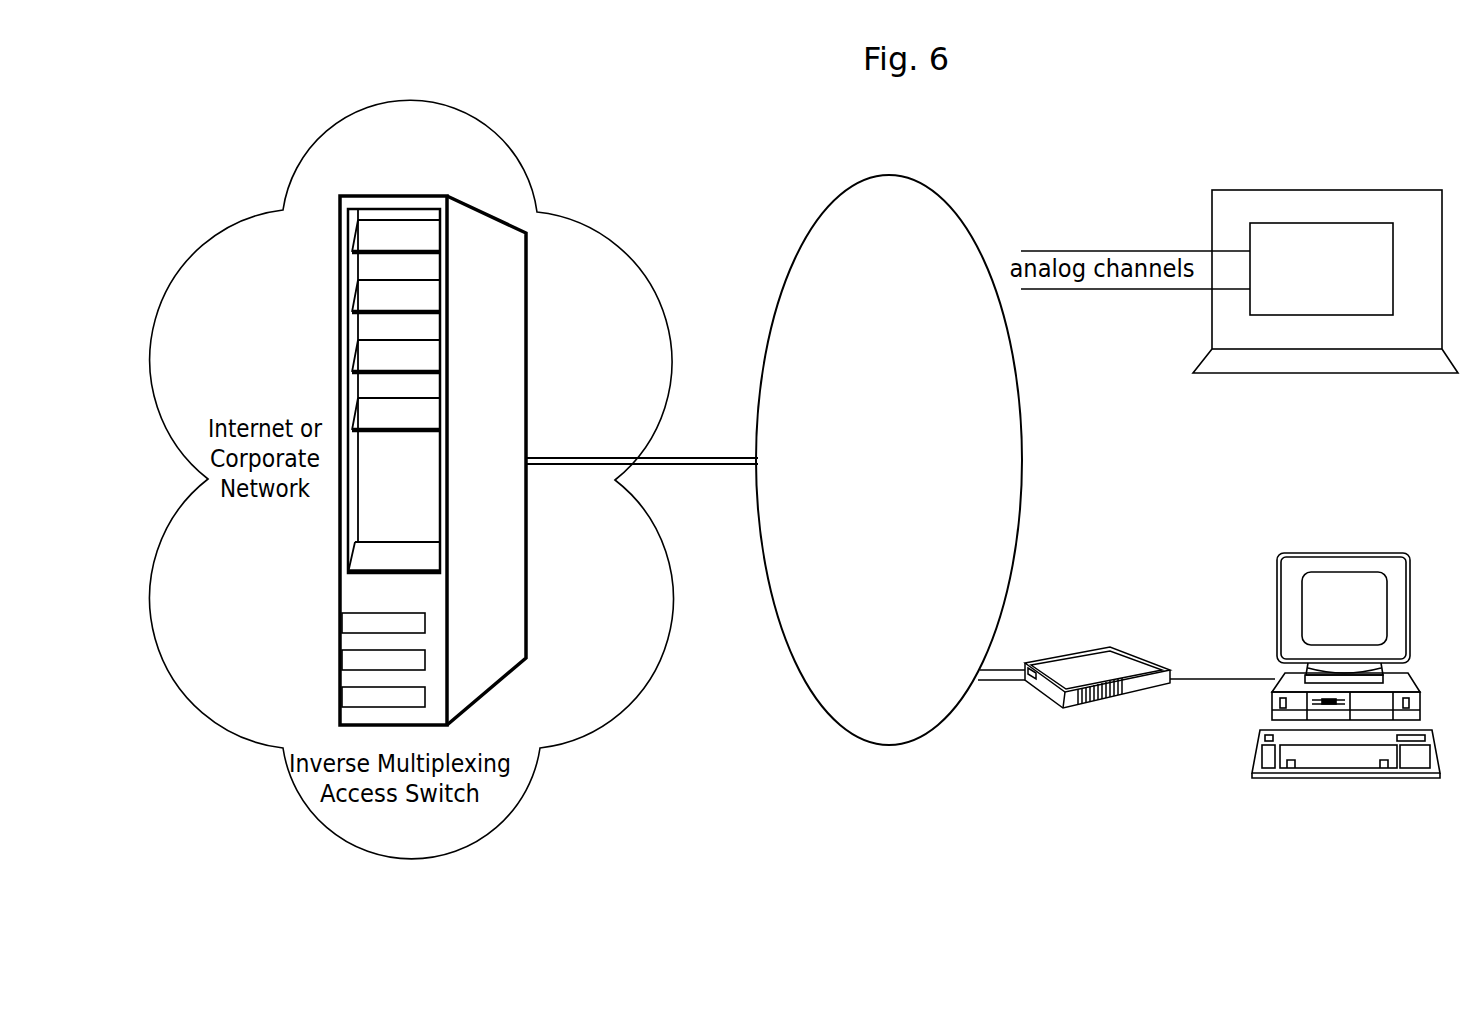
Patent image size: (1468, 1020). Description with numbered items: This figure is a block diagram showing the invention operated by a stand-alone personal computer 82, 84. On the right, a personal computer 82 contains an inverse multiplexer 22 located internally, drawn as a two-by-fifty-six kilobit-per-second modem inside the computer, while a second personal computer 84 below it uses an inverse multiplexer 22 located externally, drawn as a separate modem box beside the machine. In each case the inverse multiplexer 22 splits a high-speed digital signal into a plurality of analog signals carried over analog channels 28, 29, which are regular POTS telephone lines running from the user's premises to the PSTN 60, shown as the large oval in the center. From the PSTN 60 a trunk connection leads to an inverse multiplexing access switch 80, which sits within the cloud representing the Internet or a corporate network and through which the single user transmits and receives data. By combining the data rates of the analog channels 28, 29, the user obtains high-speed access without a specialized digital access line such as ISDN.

The access switch 80 is at (436, 196).
The PSTN 60 is at (876, 500).
The analog channel 28 is at (1104, 251).
The analog channel 29 is at (1103, 292).
The personal computer 82 is at (1403, 218).
The inverse multiplexer 22 is at (1336, 310).
The personal computer 84 is at (1334, 553).